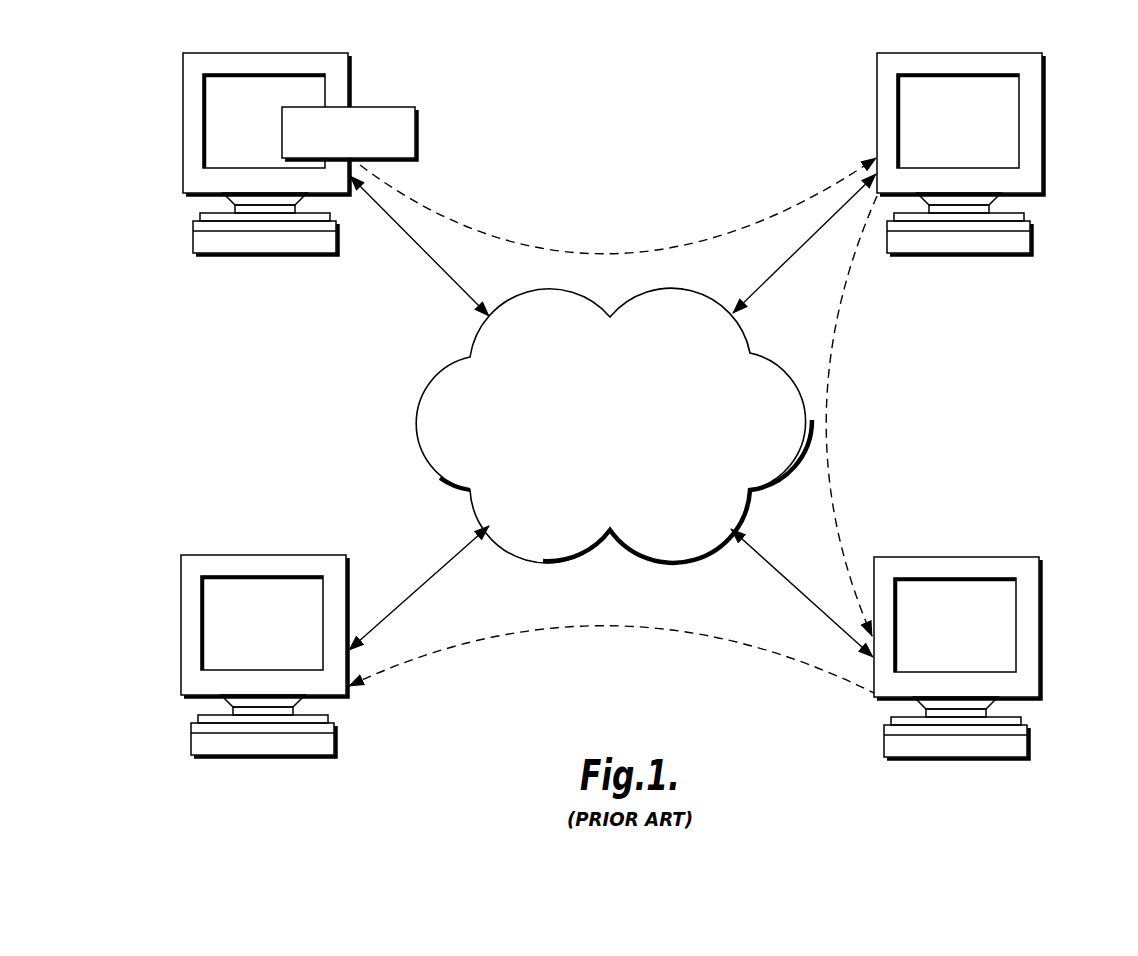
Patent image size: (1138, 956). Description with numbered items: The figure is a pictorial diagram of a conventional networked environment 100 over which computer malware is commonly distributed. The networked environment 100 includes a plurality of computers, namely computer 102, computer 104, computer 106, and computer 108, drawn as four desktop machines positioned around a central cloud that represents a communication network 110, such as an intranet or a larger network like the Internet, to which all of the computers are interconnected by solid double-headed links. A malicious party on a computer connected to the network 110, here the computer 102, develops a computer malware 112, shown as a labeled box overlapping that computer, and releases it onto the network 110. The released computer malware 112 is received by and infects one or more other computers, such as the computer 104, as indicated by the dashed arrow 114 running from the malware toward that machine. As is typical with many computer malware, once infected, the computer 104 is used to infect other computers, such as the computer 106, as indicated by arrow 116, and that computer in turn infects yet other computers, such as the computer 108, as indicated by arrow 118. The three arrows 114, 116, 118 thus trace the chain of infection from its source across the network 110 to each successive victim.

The networked environment 100 is at (584, 80).
The computer 102 is at (182, 125).
The computer 104 is at (1044, 128).
The computer 106 is at (1041, 655).
The computer 108 is at (180, 650).
The communication network 110 is at (413, 403).
The computer malware 112 is at (416, 122).
The arrow 114 is at (593, 253).
The arrow 116 is at (825, 422).
The arrow 118 is at (610, 626).